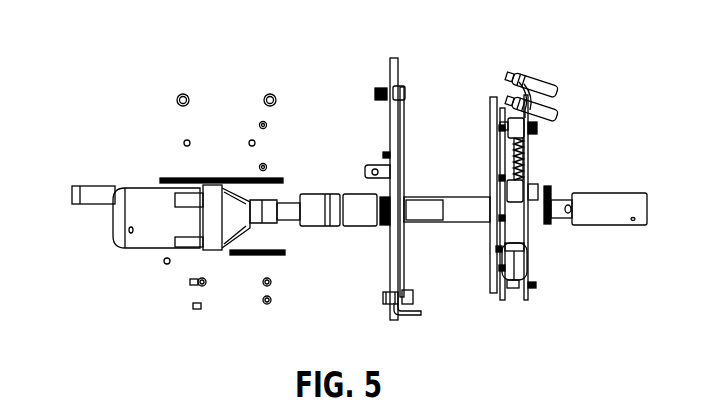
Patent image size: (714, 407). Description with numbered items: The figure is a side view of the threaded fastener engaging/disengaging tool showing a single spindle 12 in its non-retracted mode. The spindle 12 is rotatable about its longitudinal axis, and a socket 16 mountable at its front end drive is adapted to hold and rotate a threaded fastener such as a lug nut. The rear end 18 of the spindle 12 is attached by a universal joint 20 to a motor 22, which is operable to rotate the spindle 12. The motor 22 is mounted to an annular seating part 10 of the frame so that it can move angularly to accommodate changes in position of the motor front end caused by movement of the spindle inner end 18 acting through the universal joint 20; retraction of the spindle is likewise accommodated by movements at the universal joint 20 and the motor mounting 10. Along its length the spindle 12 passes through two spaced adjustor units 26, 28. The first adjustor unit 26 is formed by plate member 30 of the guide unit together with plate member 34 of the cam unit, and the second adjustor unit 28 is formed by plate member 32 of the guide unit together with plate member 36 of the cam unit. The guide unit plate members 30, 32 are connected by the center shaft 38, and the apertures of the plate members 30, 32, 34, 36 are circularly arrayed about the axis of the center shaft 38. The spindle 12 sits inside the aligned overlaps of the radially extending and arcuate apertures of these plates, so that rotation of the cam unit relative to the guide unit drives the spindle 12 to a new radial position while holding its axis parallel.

The annular seating part 10 is at (237, 252).
The spindle 12 is at (562, 212).
The socket 16 is at (622, 215).
The rear end of spindle 18 is at (415, 210).
The universal joint 20 is at (347, 222).
The motor 22 is at (133, 240).
The adjustor unit 26 is at (503, 98).
The adjustor unit 28 is at (401, 72).
The plate member 30 is at (500, 283).
The plate member 32 is at (392, 278).
The plate member 34 is at (502, 280).
The plate member 36 is at (405, 258).
The center shaft 38 is at (100, 193).